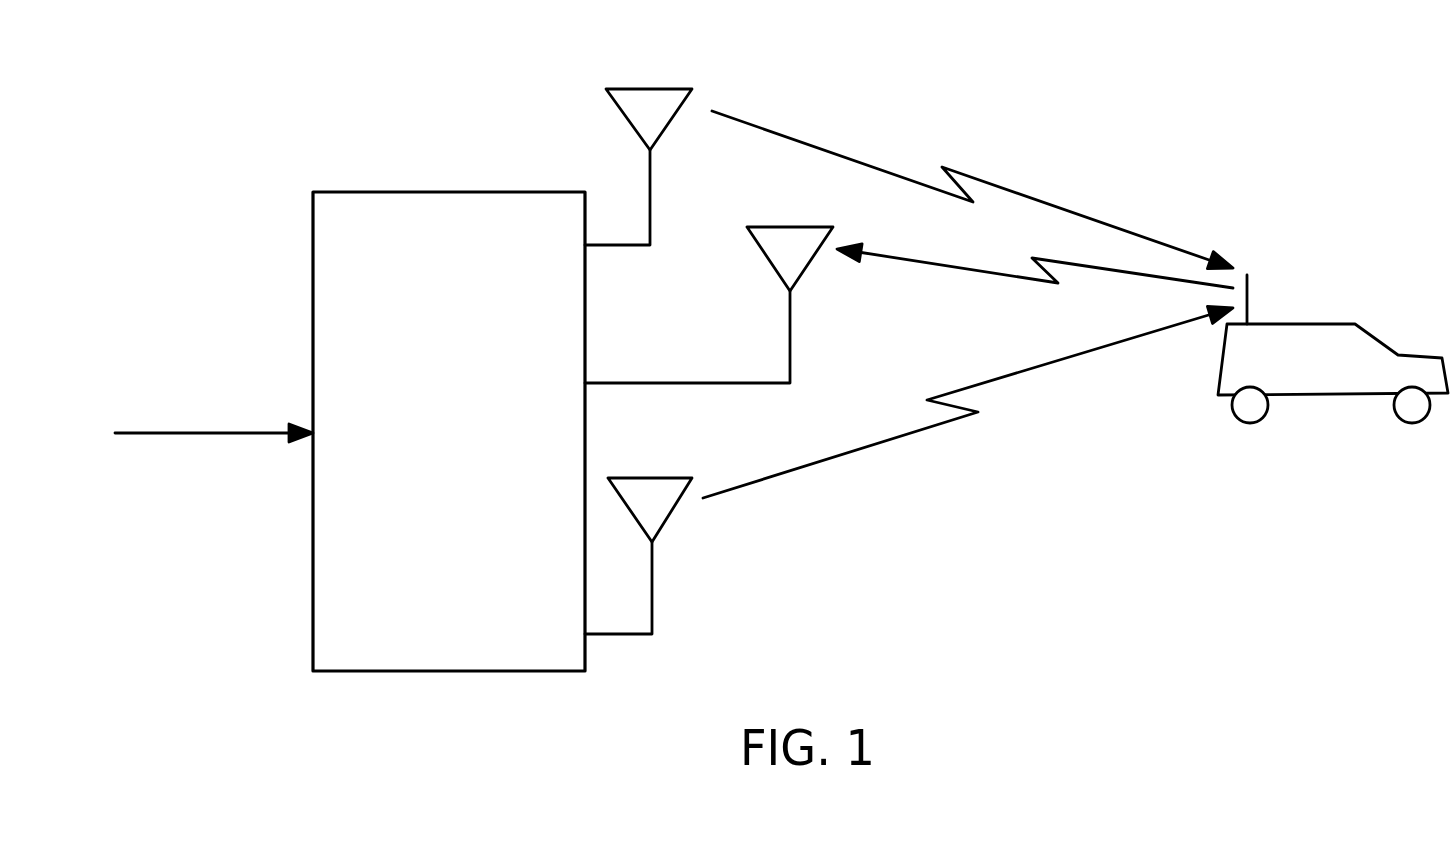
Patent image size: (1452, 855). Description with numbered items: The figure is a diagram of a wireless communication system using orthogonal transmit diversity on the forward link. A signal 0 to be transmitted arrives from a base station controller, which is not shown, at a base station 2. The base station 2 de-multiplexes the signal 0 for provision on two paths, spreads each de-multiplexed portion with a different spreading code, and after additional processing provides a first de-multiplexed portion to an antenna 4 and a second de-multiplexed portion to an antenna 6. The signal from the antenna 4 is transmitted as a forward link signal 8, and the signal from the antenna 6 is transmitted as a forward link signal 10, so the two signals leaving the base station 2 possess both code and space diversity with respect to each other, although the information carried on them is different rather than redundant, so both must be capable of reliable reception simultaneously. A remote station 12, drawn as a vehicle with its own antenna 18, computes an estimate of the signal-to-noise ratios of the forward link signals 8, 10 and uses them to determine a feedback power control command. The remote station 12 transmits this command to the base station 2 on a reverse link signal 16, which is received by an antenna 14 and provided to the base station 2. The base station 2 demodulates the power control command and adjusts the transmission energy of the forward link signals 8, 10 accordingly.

The signal 0 is at (223, 437).
The base station 2 is at (425, 190).
The antenna 4 is at (648, 88).
The antenna 6 is at (643, 477).
The forward link signal 8 is at (958, 168).
The forward link signal 10 is at (950, 420).
The remote station 12 is at (1343, 320).
The antenna 14 is at (800, 225).
The reverse link signal 16 is at (975, 272).
The mobile station antenna 18 is at (1250, 300).